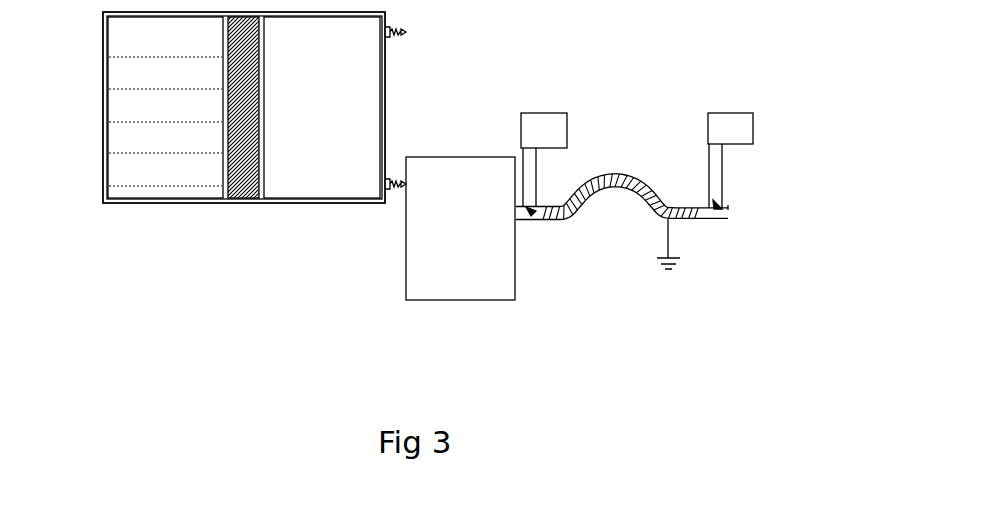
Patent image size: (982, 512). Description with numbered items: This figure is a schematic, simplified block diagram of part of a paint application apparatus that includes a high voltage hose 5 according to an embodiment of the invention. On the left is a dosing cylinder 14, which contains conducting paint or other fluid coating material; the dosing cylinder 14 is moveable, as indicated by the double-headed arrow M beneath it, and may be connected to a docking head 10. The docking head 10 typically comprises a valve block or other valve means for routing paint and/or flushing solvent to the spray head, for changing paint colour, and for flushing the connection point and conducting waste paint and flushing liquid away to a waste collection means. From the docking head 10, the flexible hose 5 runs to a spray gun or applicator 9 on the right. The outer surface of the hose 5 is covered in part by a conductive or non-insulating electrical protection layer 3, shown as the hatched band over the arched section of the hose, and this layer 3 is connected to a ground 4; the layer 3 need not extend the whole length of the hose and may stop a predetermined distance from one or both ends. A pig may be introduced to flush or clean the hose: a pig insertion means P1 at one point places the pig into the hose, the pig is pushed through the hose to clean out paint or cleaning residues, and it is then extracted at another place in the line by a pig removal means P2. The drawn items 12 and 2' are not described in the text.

The dosing cylinder 14 is at (113, 212).
The magnet element 12 is at (335, 175).
The docking head 10 is at (430, 273).
The pipe section 2' is at (564, 282).
The conductive or non-insulating electrical protection layer 3 is at (577, 213).
The ground 4 is at (680, 272).
The high voltage hose 5 is at (653, 163).
The spray gun or applicator 9 is at (740, 242).
The pig insertion means P1 is at (544, 146).
The pig removal means P2 is at (751, 159).
The arrow indicating movement M is at (269, 241).